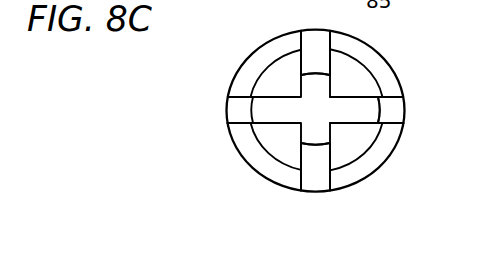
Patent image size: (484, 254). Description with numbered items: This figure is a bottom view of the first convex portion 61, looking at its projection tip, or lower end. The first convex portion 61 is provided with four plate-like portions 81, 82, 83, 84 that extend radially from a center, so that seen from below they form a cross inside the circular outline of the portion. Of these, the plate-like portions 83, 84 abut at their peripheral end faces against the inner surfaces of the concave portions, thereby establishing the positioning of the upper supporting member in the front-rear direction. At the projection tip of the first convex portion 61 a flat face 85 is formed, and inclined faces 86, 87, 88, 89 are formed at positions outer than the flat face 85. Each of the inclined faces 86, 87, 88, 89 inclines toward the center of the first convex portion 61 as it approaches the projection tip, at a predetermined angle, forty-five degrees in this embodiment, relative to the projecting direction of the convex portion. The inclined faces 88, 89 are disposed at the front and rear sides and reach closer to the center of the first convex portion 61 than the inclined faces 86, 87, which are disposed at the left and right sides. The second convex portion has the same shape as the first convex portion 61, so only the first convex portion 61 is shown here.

The first convex portion 61 is at (236, 40).
The plate-like portion 81 is at (283, 123).
The plate-like portion 82 is at (355, 97).
The plate-like portion 83 is at (331, 63).
The plate-like portion 84 is at (332, 149).
The flat face 85 is at (353, 112).
The inclined face 86 is at (240, 114).
The inclined face 87 is at (395, 114).
The inclined face 88 is at (316, 32).
The inclined face 89 is at (314, 192).